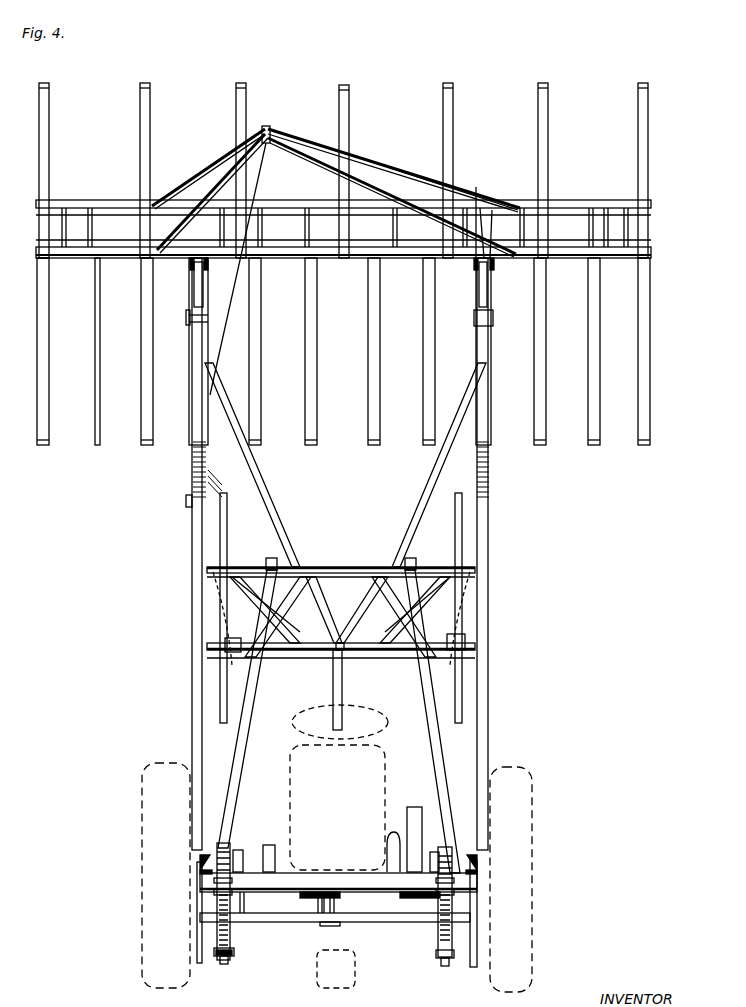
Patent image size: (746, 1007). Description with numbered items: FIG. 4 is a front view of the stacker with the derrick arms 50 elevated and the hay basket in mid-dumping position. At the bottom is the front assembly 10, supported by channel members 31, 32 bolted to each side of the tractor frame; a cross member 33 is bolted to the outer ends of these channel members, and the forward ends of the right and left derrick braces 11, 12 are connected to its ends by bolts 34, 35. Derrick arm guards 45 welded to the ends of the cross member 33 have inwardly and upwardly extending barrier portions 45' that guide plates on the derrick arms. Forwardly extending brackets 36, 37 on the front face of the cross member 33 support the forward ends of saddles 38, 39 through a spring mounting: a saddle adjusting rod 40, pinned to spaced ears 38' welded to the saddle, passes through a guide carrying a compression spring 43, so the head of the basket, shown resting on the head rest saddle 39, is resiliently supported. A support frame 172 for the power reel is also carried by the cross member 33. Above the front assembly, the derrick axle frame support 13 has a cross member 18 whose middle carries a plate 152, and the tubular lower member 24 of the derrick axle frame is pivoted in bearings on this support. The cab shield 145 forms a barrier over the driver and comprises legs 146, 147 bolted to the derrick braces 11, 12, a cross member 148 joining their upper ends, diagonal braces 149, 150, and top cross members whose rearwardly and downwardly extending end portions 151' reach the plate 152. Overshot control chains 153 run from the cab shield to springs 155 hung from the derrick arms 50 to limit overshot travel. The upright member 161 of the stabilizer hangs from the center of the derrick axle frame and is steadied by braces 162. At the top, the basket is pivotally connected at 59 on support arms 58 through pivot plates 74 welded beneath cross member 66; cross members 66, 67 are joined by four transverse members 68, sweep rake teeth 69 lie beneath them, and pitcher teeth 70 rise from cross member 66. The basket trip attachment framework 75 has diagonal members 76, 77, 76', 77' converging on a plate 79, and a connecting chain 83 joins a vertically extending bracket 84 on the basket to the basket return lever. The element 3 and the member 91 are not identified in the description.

The vehicle axle 3 is at (322, 975).
The front assembly 10 is at (306, 876).
The right derrick brace 11 is at (210, 830).
The left derrick brace 12 is at (455, 838).
The derrick axle frame support assembly 13 is at (470, 668).
The cross member 18 is at (396, 652).
The tubular lower member 24 is at (312, 650).
The channel member 31 is at (240, 850).
The channel member 32 is at (440, 848).
The cross member 33 is at (402, 915).
The bolt 34 is at (205, 868).
The bolt 35 is at (470, 872).
The bracket 36 is at (198, 905).
The bracket 37 is at (476, 900).
The saddle 38 is at (203, 977).
The ear 38' is at (239, 953).
The saddle 39 is at (446, 960).
The saddle adjusting rod 40 is at (220, 935).
The compression spring 43 is at (215, 882).
The derrick arm guard 45 is at (344, 912).
The barrier portion 45' is at (347, 856).
The derrick arm 50 is at (192, 640).
The support arm 58 is at (192, 290).
The pivotal connection 59 is at (192, 282).
The cross member 66 is at (600, 260).
The cross member 67 is at (570, 202).
The transverse member 68 is at (66, 210).
The sweep rake tooth 69 is at (645, 335).
The pitcher tooth 70 is at (645, 137).
The pivot plate 74 is at (190, 268).
The basket trip attachment framework 75 is at (290, 130).
The diagonal member 76 is at (449, 180).
The diagonal member 76' is at (392, 197).
The diagonal member 77 is at (208, 169).
The diagonal member 77' is at (212, 193).
The plate 79 is at (270, 126).
The connecting chain 83 is at (500, 212).
The bracket 84 is at (474, 188).
The diagonal strut 91 is at (256, 472).
The cab shield 145 is at (340, 563).
The leg 146 is at (240, 726).
The leg 147 is at (430, 708).
The cross member 148 is at (342, 567).
The brace 149 is at (282, 612).
The brace 150 is at (395, 606).
The end portion 151' is at (340, 576).
The plate 152 is at (330, 668).
The overshot control chain 153 is at (215, 590).
The spring 155 is at (190, 488).
The upright member 161 is at (342, 690).
The steadying brace 162 is at (302, 916).
The support frame 172 is at (408, 807).